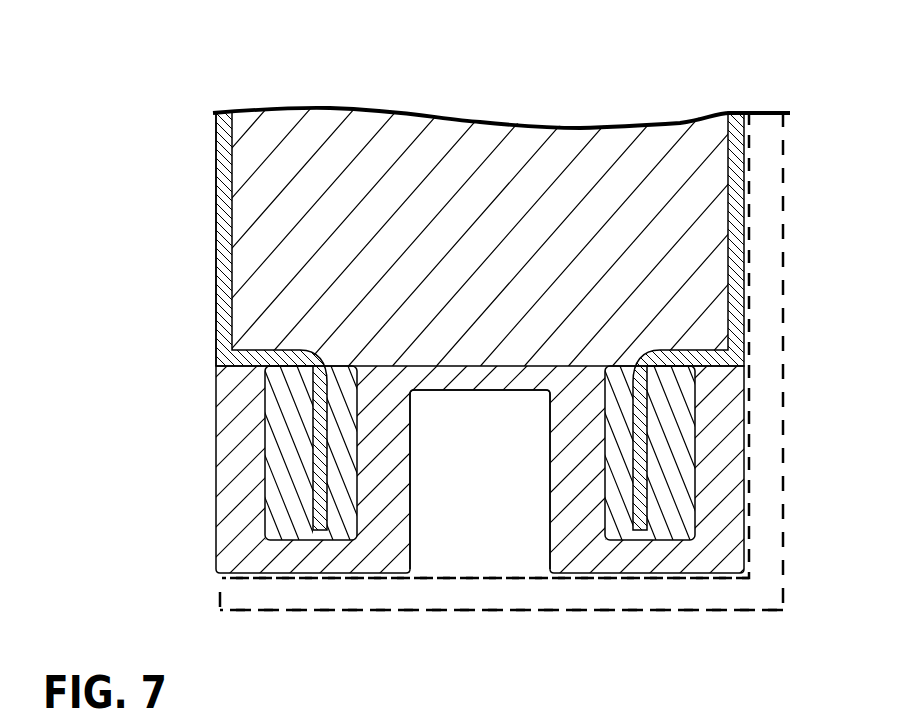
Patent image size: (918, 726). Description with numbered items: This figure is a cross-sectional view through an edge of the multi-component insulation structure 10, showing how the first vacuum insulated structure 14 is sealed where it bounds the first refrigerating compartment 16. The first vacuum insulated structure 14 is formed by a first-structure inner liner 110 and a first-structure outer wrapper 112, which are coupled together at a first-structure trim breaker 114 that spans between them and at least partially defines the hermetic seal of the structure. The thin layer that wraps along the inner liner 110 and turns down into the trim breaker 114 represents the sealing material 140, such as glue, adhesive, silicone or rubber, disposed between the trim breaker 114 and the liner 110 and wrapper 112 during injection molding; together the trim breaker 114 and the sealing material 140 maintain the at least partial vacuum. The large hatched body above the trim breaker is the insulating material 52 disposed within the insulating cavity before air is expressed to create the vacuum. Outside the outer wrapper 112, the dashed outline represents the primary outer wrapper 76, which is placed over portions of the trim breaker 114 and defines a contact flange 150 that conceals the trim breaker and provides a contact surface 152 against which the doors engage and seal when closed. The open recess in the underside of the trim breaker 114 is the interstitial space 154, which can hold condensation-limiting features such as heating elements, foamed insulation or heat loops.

The multi-component insulation structure 10 is at (118, 193).
The first vacuum insulated structure 14 is at (205, 240).
The first refrigerating compartment 16 is at (190, 165).
The insulating material 52 is at (597, 163).
The primary outer wrapper 76 is at (760, 295).
The first-structure inner liner 110 is at (223, 278).
The first-structure outer wrapper 112 is at (736, 195).
The first-structure trim breaker 114 is at (227, 500).
The sealing material 140 is at (283, 420).
The contact flange 150 is at (344, 588).
The contact surface 152 is at (488, 612).
The interstitial space 154 is at (483, 485).